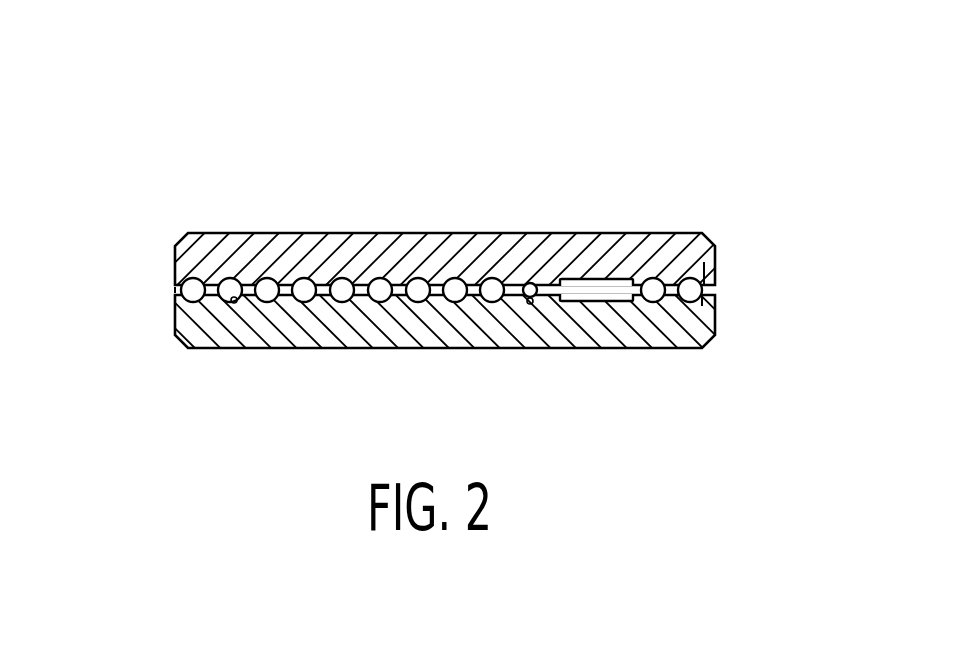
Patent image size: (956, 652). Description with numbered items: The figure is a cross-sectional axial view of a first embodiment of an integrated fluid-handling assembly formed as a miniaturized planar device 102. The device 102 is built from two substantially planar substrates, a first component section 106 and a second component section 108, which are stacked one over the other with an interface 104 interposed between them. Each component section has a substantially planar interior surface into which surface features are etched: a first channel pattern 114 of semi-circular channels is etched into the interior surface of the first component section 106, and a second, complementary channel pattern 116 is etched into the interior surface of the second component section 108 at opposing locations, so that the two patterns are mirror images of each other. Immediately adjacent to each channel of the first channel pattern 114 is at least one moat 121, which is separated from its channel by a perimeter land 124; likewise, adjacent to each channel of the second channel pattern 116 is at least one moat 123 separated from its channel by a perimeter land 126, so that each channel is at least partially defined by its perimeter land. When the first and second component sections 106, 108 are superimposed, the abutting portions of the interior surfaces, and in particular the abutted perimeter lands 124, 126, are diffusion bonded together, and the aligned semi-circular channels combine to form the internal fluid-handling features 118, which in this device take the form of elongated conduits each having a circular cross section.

The miniaturized planar device 102 is at (494, 116).
The interface 104 is at (150, 276).
The first component section 106 is at (715, 268).
The second component section 108 is at (715, 318).
The first channel pattern 114 is at (303, 281).
The second channel pattern 116 is at (297, 306).
The internal fluid-handling features 118 is at (210, 256).
The moat 121 is at (715, 277).
The moat 123 is at (702, 304).
The perimeter land 124 is at (680, 283).
The perimeter land 126 is at (682, 303).